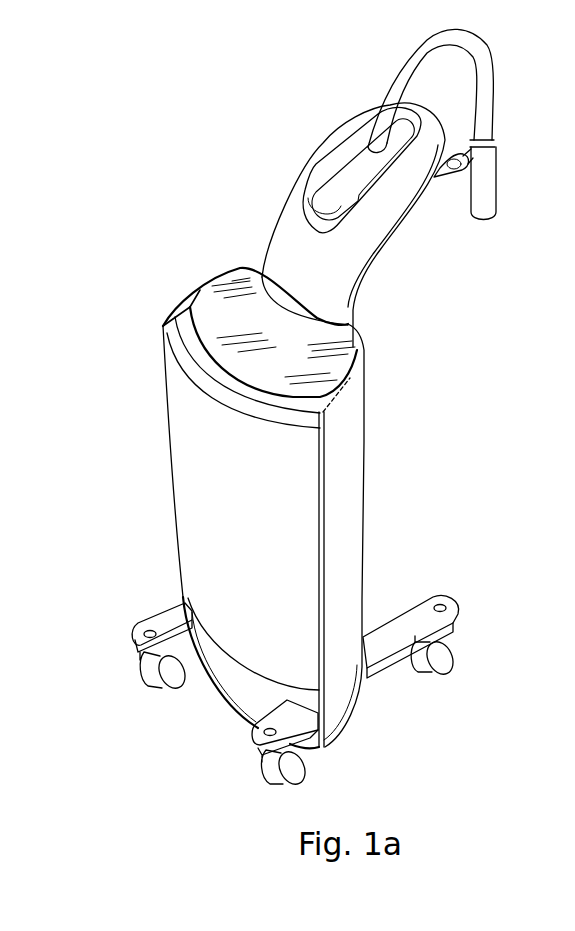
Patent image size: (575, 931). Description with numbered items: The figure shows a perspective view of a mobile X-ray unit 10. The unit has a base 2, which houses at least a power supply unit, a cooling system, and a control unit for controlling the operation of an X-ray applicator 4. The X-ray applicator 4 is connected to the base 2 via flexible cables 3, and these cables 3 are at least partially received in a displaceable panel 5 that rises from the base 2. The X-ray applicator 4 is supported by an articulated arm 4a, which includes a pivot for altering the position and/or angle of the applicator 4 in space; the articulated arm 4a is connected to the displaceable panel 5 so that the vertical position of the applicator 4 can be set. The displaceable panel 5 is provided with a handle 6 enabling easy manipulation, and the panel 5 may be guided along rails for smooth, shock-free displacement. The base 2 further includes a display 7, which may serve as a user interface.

The mobile X-ray unit 10 is at (300, 123).
The base 2 is at (365, 445).
The flexible cables 3 is at (495, 100).
The X-ray applicator 4 is at (498, 203).
The articulated arm 4a is at (443, 180).
The displaceable panel 5 is at (290, 253).
The handle 6 is at (328, 197).
The display 7 is at (220, 312).